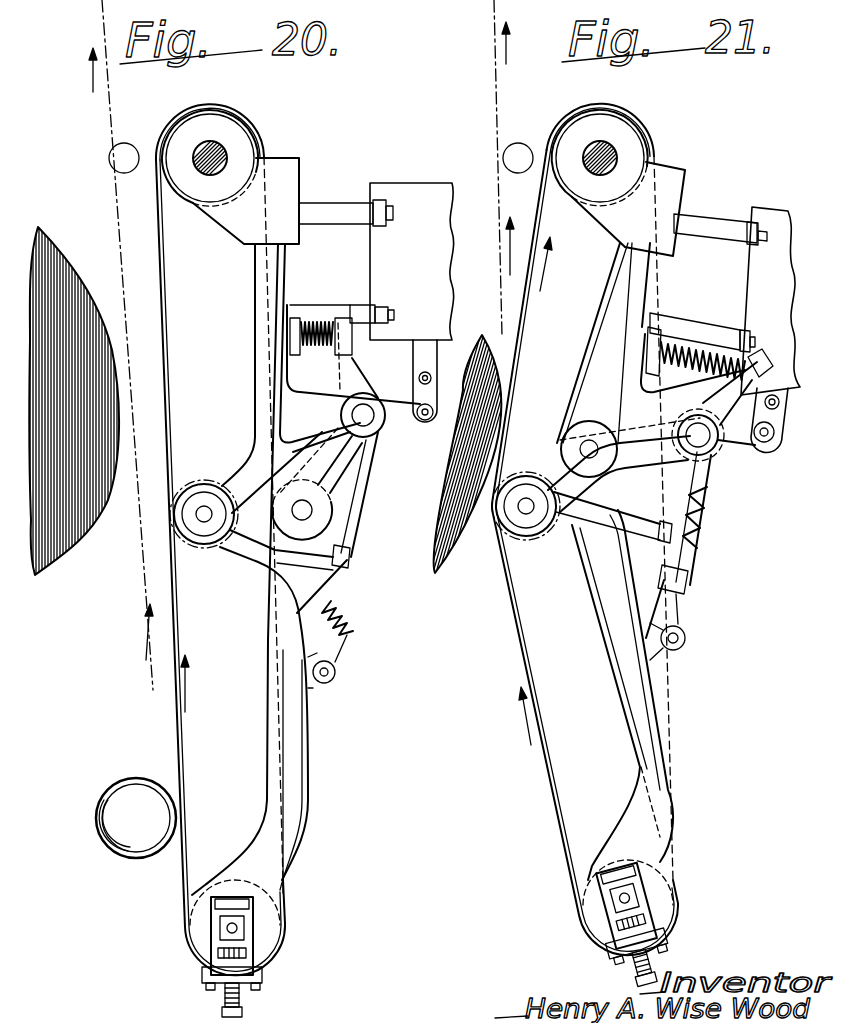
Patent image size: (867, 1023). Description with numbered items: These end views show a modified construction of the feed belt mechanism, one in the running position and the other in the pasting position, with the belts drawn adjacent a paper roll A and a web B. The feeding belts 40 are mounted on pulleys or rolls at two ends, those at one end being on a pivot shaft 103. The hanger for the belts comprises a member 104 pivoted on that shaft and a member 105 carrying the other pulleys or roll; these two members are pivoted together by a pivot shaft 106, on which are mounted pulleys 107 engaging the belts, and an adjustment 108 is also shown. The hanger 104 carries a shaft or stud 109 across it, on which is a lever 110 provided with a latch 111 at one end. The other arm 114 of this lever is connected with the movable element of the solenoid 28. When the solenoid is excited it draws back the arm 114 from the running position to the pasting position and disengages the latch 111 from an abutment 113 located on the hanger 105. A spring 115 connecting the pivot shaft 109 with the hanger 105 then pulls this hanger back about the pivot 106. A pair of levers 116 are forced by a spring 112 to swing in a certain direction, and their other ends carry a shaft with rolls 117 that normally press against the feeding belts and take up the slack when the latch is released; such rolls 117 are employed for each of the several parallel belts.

In FIG. 20, the solenoid 28 is at (380, 258).
In FIG. 21, the solenoid 28 is at (741, 307).
In FIG. 20, the feeding belts 40 is at (200, 302).
In FIG. 21, the feeding belts 40 is at (562, 334).
In FIG. 20, the pivot shaft 103 is at (222, 151).
In FIG. 21, the pivot shaft 103 is at (612, 151).
In FIG. 20, the hanger member 104 is at (255, 373).
In FIG. 21, the hanger member 104 is at (621, 302).
In FIG. 20, the hanger member 105 is at (272, 808).
In FIG. 21, the hanger member 105 is at (657, 750).
In FIG. 20, the pivot shaft 106 is at (232, 482).
In FIG. 21, the pivot shaft 106 is at (527, 512).
In FIG. 20, the pulleys 107 is at (216, 541).
In FIG. 21, the pulleys 107 is at (525, 478).
In FIG. 20, the adjustment 108 is at (244, 958).
In FIG. 21, the adjustment 108 is at (663, 931).
In FIG. 20, the shaft or stud 109 is at (370, 427).
In FIG. 21, the shaft or stud 109 is at (684, 436).
In FIG. 20, the lever 110 is at (354, 500).
In FIG. 21, the lever 110 is at (716, 478).
In FIG. 20, the latch 111 is at (350, 560).
In FIG. 21, the latch 111 is at (688, 576).
In FIG. 20, the spring 112 is at (318, 322).
In FIG. 21, the spring 112 is at (665, 355).
In FIG. 20, the abutment 113 is at (328, 570).
In FIG. 21, the abutment 113 is at (660, 515).
In FIG. 20, the arm 114 is at (418, 427).
In FIG. 21, the arm 114 is at (752, 447).
In FIG. 20, the spring 115 is at (346, 626).
In FIG. 21, the spring 115 is at (684, 603).
In FIG. 20, the levers 116 is at (356, 365).
In FIG. 21, the levers 116 is at (707, 402).
In FIG. 20, the rolls 117 is at (320, 520).
In FIG. 21, the rolls 117 is at (572, 432).
In FIG. 20, the paper roll A is at (45, 765).
In FIG. 20, the paper web B is at (66, 279).
In FIG. 21, the paper web B is at (424, 595).